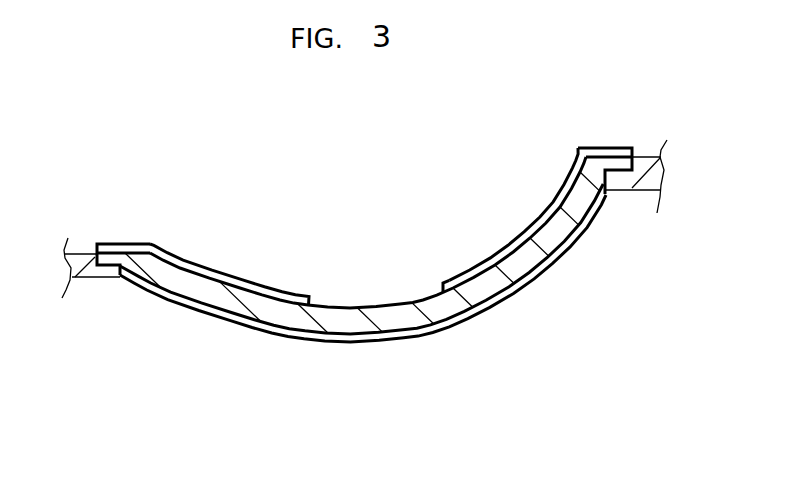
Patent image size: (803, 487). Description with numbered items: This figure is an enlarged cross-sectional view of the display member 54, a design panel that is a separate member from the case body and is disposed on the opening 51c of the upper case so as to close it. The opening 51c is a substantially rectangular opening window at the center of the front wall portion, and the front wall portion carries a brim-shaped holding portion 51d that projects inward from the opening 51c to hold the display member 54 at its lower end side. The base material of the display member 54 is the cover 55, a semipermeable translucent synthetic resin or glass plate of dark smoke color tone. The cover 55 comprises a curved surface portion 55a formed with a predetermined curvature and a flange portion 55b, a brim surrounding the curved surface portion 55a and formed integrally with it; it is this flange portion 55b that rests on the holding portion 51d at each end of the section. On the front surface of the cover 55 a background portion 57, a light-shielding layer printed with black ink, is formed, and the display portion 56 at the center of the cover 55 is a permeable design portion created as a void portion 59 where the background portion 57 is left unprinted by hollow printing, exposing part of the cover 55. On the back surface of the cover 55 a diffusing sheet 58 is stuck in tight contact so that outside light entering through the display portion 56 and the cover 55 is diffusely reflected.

The opening 51c is at (94, 257).
The holding portion 51d is at (108, 272).
The display member 54 is at (315, 172).
The cover 55 is at (364, 237).
The curved surface portion 55a is at (480, 293).
The flange portion 55b is at (615, 163).
The display portion 56 is at (376, 290).
The background portion 57 is at (215, 278).
The diffusing sheet 58 is at (342, 336).
The void portion 59 is at (442, 278).